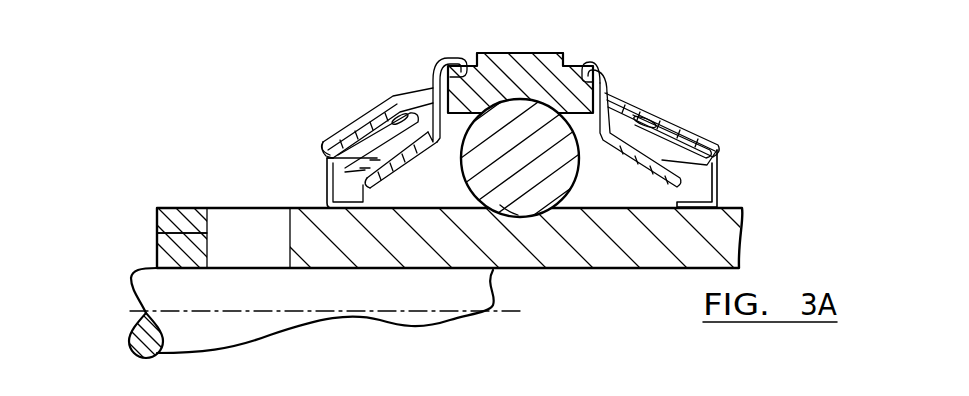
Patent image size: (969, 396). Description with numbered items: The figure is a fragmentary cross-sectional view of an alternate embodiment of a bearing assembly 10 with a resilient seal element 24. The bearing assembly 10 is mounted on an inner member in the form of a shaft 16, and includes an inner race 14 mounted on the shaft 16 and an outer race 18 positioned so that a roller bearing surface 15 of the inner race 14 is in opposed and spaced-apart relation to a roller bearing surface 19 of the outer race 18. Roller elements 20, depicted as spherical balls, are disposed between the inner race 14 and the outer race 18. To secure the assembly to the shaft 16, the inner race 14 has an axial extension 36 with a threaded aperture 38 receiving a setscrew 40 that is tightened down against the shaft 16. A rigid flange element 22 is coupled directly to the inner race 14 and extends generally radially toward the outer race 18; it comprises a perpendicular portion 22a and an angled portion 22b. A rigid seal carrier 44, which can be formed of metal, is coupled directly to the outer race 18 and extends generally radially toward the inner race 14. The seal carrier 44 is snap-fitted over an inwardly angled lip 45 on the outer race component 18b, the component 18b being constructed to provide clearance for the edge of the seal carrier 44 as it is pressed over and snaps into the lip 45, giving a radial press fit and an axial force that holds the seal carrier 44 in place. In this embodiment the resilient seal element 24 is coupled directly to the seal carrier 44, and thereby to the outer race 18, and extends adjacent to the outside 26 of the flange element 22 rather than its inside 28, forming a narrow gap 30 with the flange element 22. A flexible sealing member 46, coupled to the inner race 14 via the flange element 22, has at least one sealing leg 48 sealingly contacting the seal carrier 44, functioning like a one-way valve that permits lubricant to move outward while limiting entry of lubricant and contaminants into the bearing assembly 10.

The bearing assembly 10 is at (767, 92).
The inner race 14 is at (408, 263).
The roller bearing surface 15 is at (500, 205).
The shaft 16 is at (180, 322).
The outer race 18 is at (530, 45).
The outer race component 18b is at (512, 72).
The roller bearing surface 19 is at (563, 53).
The roller elements 20 is at (553, 180).
The flange element 22 is at (336, 201).
The perpendicular portion 22a is at (326, 195).
The angled portion 22b is at (333, 160).
The resilient seal element 24 is at (372, 108).
The outside 26 is at (333, 138).
The inside 28 is at (688, 142).
The gap 30 is at (436, 143).
The axial extension 36 is at (170, 223).
The threaded aperture 38 is at (187, 233).
The setscrew 40 is at (233, 243).
The seal carrier 44 is at (375, 160).
The inwardly angled lip 45 is at (442, 71).
The flexible sealing member 46 is at (337, 208).
The sealing leg 48 is at (365, 168).